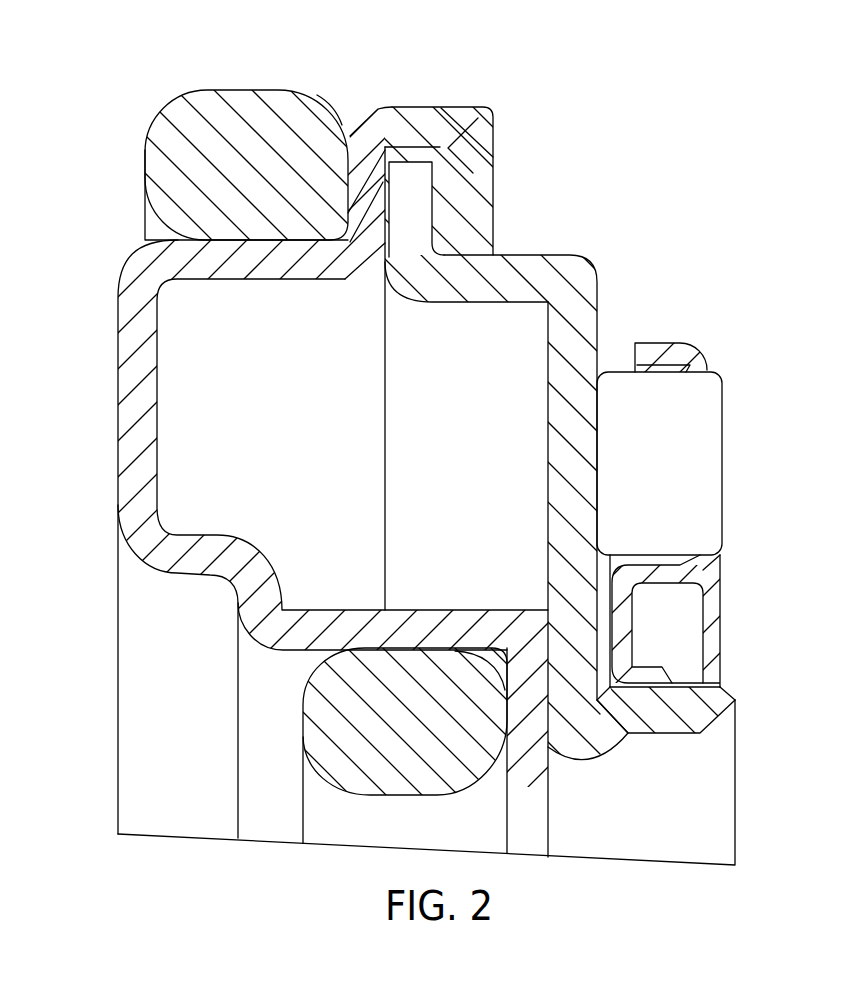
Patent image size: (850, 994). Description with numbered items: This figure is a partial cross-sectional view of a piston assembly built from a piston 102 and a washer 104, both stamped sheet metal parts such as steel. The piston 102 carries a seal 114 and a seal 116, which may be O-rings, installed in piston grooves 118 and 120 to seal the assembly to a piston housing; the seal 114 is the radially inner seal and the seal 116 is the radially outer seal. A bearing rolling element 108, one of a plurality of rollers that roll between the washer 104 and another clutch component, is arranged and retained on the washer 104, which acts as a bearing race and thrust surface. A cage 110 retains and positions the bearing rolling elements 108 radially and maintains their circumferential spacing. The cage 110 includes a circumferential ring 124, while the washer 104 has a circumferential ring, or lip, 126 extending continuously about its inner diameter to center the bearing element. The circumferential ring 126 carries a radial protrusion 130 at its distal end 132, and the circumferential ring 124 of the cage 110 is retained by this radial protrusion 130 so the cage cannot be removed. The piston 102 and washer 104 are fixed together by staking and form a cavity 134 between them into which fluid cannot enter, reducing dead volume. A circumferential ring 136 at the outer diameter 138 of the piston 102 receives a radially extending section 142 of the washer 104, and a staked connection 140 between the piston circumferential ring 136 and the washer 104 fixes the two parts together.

The piston 102 is at (349, 175).
The washer 104 is at (562, 290).
The bearing rolling element 108 is at (723, 426).
The cage 110 is at (655, 343).
The seal 114 is at (302, 737).
The seal 116 is at (208, 90).
The piston groove 118 is at (300, 650).
The piston groove 120 is at (163, 271).
The circumferential ring 124 is at (667, 663).
The circumferential ring 126 is at (665, 725).
The radial protrusion 130 is at (722, 690).
The distal end 132 is at (737, 712).
The cavity 134 is at (176, 378).
The circumferential ring 136 is at (412, 107).
The outer diameter 138 is at (357, 133).
The staked connection 140 is at (484, 107).
The radially extending section 142 is at (379, 226).